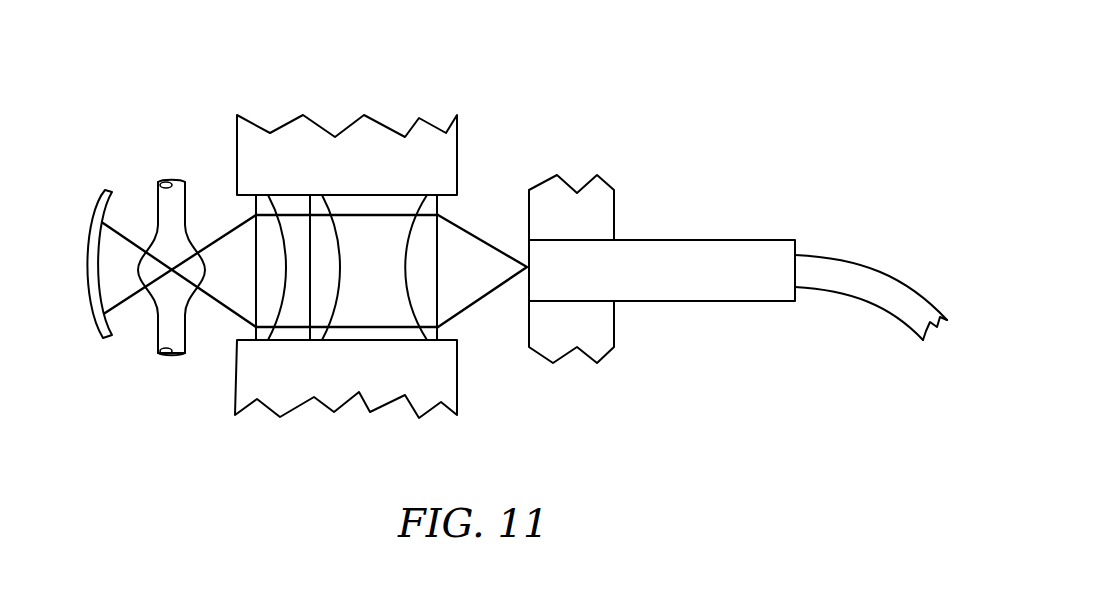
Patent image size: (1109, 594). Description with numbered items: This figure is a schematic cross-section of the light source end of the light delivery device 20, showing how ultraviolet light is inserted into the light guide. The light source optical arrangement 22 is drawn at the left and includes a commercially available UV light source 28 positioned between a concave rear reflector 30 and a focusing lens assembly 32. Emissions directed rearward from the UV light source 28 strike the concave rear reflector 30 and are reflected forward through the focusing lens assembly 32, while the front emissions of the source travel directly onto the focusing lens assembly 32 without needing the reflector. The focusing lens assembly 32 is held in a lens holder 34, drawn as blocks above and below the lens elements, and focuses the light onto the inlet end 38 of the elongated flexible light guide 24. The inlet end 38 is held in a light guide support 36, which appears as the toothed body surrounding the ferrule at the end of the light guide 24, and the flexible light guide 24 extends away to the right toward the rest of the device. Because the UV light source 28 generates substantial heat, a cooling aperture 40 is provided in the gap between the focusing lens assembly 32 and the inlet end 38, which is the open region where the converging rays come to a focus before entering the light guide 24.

The light delivery device 20 is at (632, 194).
The light source optical arrangement 22 is at (396, 219).
The elongated flexible light guide 24 is at (890, 276).
The UV light source 28 is at (157, 190).
The concave rear reflector 30 is at (93, 198).
The focusing lens assembly 32 is at (386, 281).
The lens holder 34 is at (458, 160).
The light guide support 36 is at (614, 205).
The inlet end 38 is at (528, 240).
The cooling aperture 40 is at (511, 349).